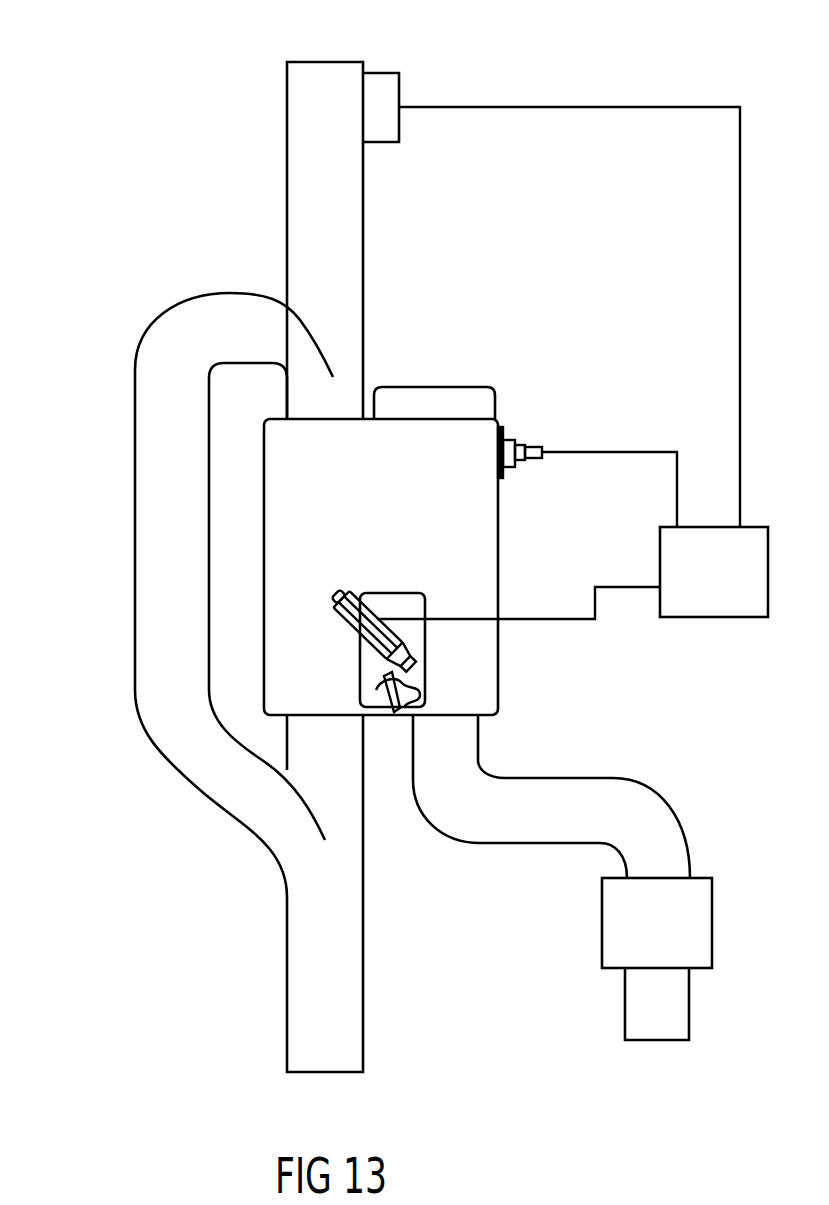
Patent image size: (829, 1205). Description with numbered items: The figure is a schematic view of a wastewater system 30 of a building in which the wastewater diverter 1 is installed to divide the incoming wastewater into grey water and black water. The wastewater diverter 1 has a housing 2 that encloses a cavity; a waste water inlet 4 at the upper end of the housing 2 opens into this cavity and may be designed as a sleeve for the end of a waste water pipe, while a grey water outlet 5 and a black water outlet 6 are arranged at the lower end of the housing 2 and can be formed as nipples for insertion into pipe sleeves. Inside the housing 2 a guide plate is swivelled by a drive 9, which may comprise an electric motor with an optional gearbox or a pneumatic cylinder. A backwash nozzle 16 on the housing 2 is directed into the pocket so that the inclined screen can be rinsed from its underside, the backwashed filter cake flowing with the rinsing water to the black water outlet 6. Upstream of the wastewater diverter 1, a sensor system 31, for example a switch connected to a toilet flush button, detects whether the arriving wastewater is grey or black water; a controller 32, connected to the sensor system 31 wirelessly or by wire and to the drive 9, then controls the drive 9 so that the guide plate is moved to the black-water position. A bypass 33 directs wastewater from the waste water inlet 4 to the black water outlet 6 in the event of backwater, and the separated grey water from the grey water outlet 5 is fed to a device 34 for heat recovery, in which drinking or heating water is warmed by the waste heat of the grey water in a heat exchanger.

The wastewater diverter 1 is at (526, 556).
The housing 2 is at (480, 522).
The waste water inlet 4 is at (370, 377).
The grey water outlet 5 is at (460, 750).
The black water outlet 6 is at (347, 760).
The drive 9 is at (371, 597).
The backwash nozzle 16 is at (507, 441).
The wastewater system 30 is at (183, 105).
The sensor system 31 is at (388, 120).
The controller 32 is at (729, 589).
The bypass 33 is at (152, 565).
The device for heat recovery 34 is at (674, 944).